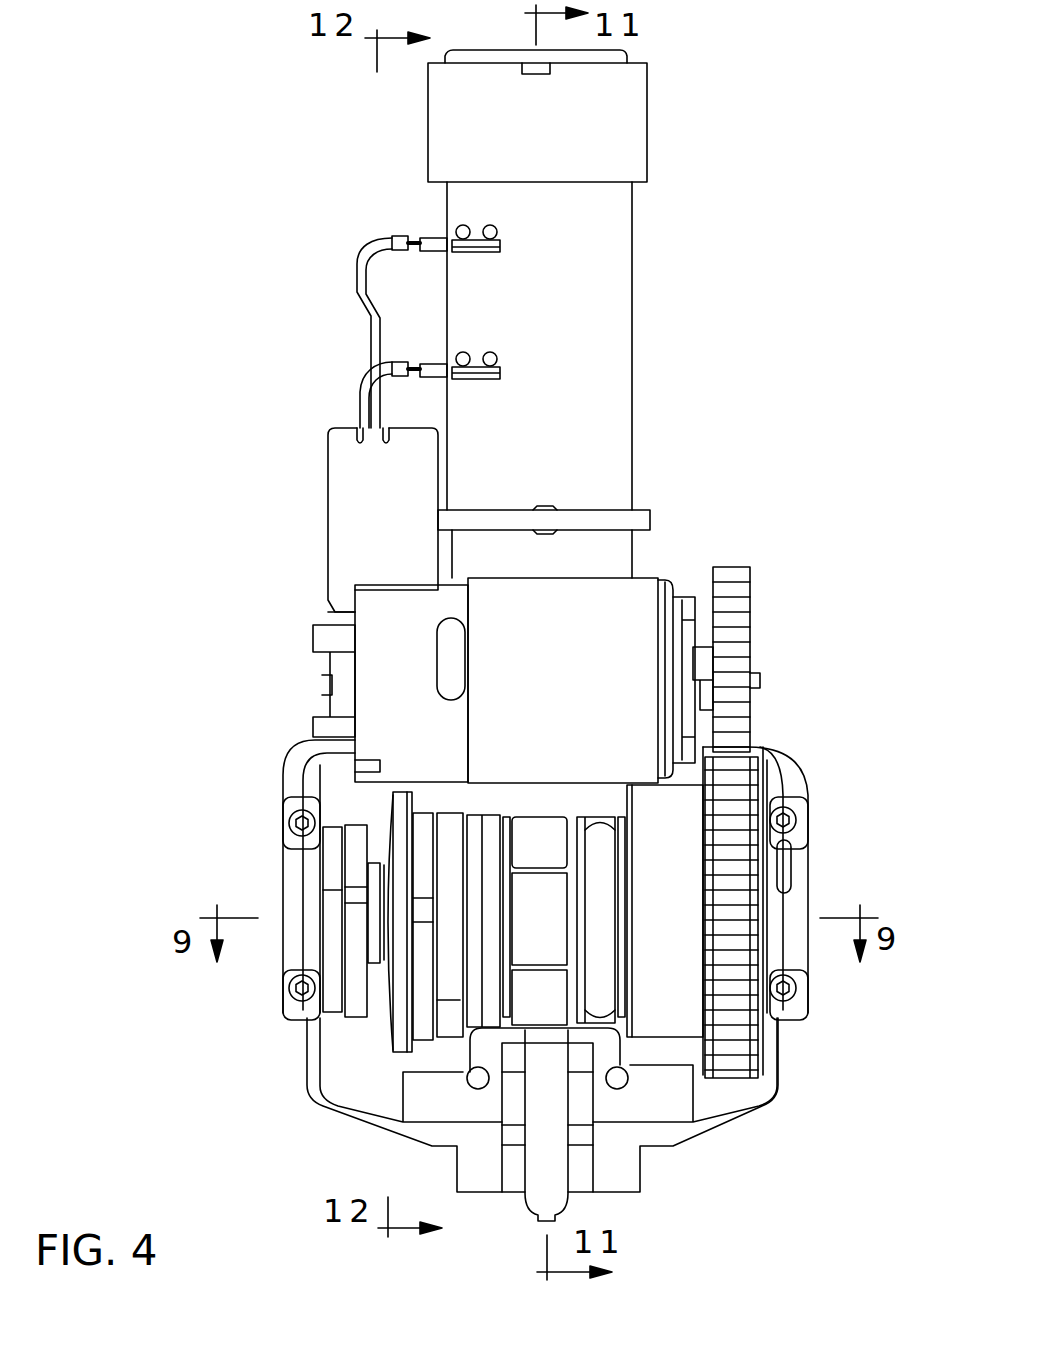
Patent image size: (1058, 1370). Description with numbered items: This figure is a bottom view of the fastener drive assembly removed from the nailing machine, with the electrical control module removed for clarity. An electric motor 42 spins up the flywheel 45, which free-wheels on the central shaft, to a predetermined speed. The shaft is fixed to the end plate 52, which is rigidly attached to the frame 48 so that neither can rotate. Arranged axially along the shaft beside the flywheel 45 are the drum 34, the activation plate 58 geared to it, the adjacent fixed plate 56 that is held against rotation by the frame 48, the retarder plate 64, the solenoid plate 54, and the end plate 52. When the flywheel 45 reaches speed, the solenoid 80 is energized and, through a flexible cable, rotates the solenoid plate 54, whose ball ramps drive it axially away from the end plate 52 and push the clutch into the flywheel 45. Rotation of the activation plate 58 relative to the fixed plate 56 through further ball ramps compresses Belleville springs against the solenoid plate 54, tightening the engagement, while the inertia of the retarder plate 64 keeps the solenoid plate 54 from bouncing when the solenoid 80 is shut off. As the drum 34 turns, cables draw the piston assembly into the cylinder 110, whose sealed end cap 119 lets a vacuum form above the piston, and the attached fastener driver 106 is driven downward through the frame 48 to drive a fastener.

The end cap 119 is at (648, 88).
The cylinder 110 is at (632, 328).
The solenoid 80 is at (328, 492).
The electric motor 42 is at (645, 578).
The retarder plate 64 is at (392, 790).
The fixed plate 56 is at (422, 820).
The activation plate 58 is at (447, 823).
The drum 34 is at (553, 941).
The flywheel 45 is at (680, 926).
The end plate 52 is at (333, 1016).
The solenoid plate 54 is at (350, 1020).
The frame 48 is at (672, 1132).
The fastener driver 106 is at (566, 1196).